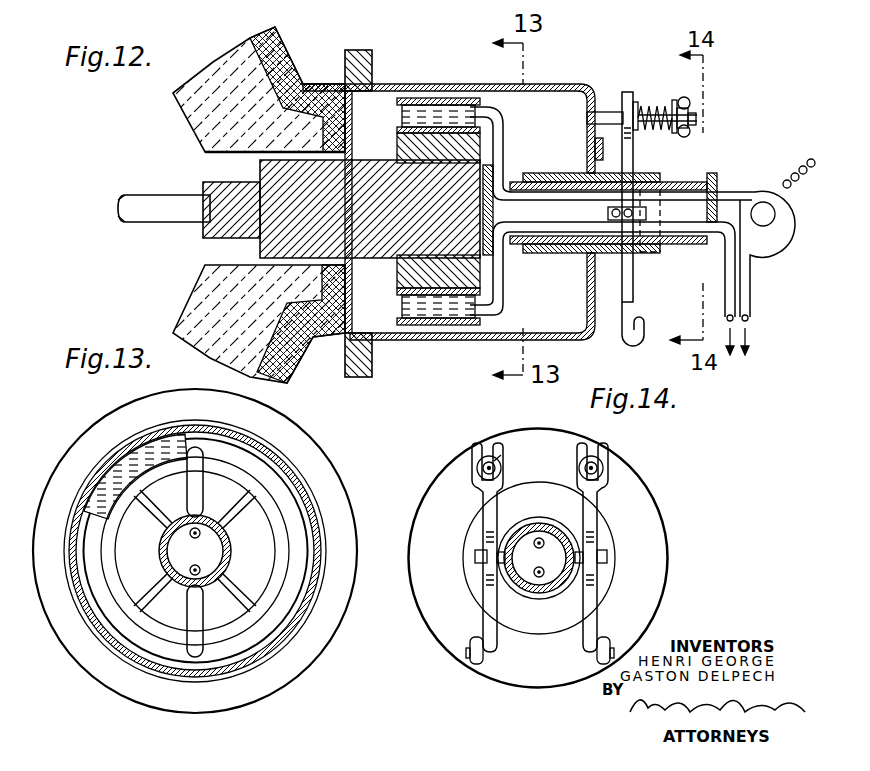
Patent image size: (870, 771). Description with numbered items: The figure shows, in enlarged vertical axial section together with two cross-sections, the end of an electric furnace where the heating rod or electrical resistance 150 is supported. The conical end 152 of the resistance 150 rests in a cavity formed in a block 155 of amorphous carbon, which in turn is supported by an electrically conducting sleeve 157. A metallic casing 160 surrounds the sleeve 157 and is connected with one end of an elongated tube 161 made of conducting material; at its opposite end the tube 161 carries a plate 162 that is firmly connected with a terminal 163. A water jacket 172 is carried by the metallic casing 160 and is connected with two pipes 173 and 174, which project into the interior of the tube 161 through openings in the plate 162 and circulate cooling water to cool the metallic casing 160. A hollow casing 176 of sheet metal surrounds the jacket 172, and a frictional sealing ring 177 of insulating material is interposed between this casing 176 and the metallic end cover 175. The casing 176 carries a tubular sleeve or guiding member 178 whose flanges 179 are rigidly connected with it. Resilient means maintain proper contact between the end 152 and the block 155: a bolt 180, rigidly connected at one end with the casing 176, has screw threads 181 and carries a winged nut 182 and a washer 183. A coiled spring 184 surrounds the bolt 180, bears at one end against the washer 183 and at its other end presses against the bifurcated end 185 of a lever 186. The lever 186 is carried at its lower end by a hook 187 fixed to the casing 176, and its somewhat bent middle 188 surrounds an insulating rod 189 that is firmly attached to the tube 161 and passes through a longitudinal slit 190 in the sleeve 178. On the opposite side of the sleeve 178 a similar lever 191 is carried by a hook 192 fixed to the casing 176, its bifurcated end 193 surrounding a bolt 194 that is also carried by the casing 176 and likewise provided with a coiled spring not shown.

In FIG. 12, the heating rod or electrical resistance 150 is at (142, 197).
In FIG. 12, the conical end of the resistance 152 is at (205, 226).
In FIG. 12, the block 155 is at (373, 250).
In FIG. 12, the sleeve 157 is at (452, 289).
In FIG. 12, the metallic casing 160 is at (441, 132).
In FIG. 12, the elongated tube 161 is at (528, 248).
In FIG. 13, the elongated tube 161 is at (217, 551).
In FIG. 14, the elongated tube 161 is at (557, 585).
In FIG. 12, the plate 162 is at (710, 182).
In FIG. 12, the terminal 163 is at (768, 182).
In FIG. 12, the jacket 172 is at (420, 99).
In FIG. 13, the jacket 172 is at (292, 527).
In FIG. 12, the pipe 173 is at (506, 134).
In FIG. 13, the pipe 173 is at (203, 462).
In FIG. 12, the pipe 174 is at (505, 298).
In FIG. 13, the pipe 174 is at (194, 647).
In FIG. 12, the metallic end cover 175 is at (297, 378).
In FIG. 12, the hollow casing 176 is at (404, 342).
In FIG. 13, the hollow casing 176 is at (307, 492).
In FIG. 14, the hollow casing 176 is at (640, 592).
In FIG. 12, the frictional sealing ring 177 is at (364, 50).
In FIG. 12, the tubular sleeve or guiding member 178 is at (648, 178).
In FIG. 14, the tubular sleeve or guiding member 178 is at (541, 518).
In FIG. 12, the flanges 179 is at (600, 146).
In FIG. 12, the bolt 180 is at (599, 112).
In FIG. 12, the screw threads 181 is at (660, 109).
In FIG. 12, the winged nut 182 is at (690, 102).
In FIG. 12, the washer 183 is at (697, 121).
In FIG. 12, the coiled spring 184 is at (640, 104).
In FIG. 12, the bifurcated end of the lever 185 is at (628, 91).
In FIG. 14, the bifurcated end of the lever 185 is at (606, 470).
In FIG. 12, the lever 186 is at (624, 306).
In FIG. 14, the lever 186 is at (591, 530).
In FIG. 14, the hook 187 is at (607, 640).
In FIG. 12, the middle of the lever 188 is at (642, 283).
In FIG. 14, the middle of the lever 188 is at (607, 575).
In FIG. 14, the insulating rod 189 is at (600, 556).
In FIG. 12, the longitudinal slit 190 is at (642, 262).
In FIG. 14, the lever 191 is at (486, 622).
In FIG. 14, the hook 192 is at (478, 670).
In FIG. 14, the bifurcated end of the lever 193 is at (497, 448).
In FIG. 14, the bolt 194 is at (477, 472).